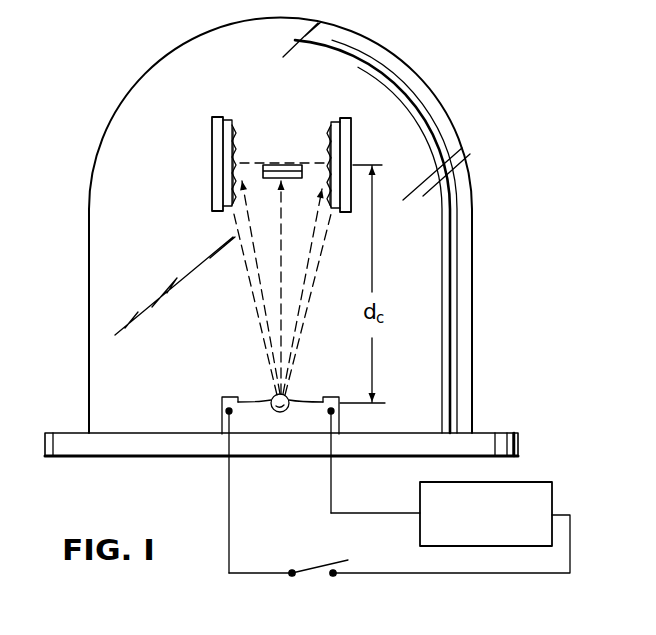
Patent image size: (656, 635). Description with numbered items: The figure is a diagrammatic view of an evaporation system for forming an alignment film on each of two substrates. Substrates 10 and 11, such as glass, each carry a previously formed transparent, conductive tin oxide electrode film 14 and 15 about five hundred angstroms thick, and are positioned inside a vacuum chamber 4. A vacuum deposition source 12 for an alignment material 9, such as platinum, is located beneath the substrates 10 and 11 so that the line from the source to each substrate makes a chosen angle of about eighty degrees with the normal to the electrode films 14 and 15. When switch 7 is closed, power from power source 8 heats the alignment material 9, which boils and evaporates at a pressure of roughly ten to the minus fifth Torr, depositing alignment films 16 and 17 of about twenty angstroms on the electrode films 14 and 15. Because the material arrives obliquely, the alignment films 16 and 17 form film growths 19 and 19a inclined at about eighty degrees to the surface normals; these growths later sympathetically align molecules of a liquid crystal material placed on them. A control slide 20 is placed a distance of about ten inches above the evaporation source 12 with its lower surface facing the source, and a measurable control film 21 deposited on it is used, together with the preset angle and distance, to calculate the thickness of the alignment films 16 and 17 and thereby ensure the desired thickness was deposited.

The vacuum chamber 4 is at (437, 100).
The switch 7 is at (312, 568).
The power source 8 is at (553, 496).
The alignment material 9 is at (272, 397).
The substrate 10 is at (213, 116).
The substrate 11 is at (351, 118).
The vacuum deposition source 12 is at (305, 403).
The electrode film 14 is at (225, 119).
The electrode film 15 is at (334, 121).
The alignment film 16 is at (236, 148).
The alignment film 17 is at (328, 148).
The film growth 19 is at (236, 172).
The film growth 19a is at (329, 170).
The control slide 20 is at (276, 165).
The control film 21 is at (274, 192).